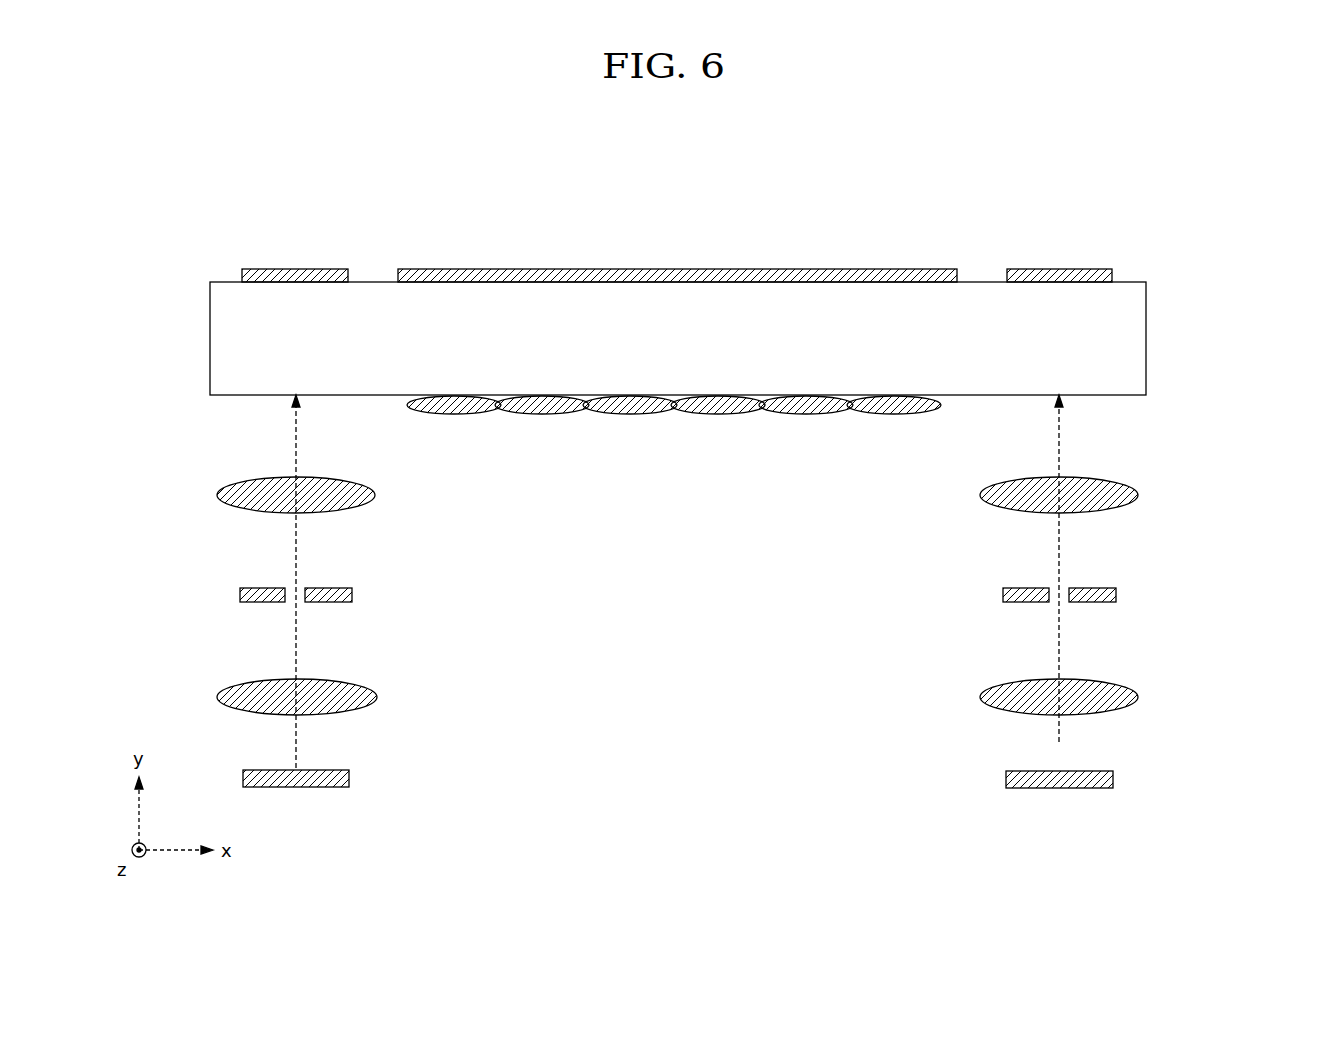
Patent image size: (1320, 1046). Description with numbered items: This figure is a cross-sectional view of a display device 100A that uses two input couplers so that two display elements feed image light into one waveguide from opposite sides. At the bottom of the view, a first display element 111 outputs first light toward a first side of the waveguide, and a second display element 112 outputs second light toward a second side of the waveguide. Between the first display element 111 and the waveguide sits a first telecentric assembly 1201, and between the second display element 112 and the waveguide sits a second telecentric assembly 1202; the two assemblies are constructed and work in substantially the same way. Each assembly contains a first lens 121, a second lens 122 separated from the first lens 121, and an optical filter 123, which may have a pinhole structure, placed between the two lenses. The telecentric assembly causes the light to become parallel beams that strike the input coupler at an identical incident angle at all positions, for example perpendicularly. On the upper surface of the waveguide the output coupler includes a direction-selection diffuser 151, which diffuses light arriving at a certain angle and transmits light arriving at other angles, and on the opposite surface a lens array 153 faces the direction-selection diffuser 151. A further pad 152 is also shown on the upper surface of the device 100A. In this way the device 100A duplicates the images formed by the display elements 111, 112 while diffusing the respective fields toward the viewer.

The display device 100A is at (1152, 238).
The direction-selection diffuser 151 is at (293, 268).
The electrode pad 152 is at (1062, 268).
The lens array 153 is at (893, 422).
The second lens 122 is at (365, 503).
The optical filter 123 is at (355, 597).
The first lens 121 is at (367, 687).
The first telecentric assembly 1201 is at (452, 533).
The second telecentric assembly 1202 is at (1216, 533).
The first display element 111 is at (350, 779).
The second display element 112 is at (1114, 779).